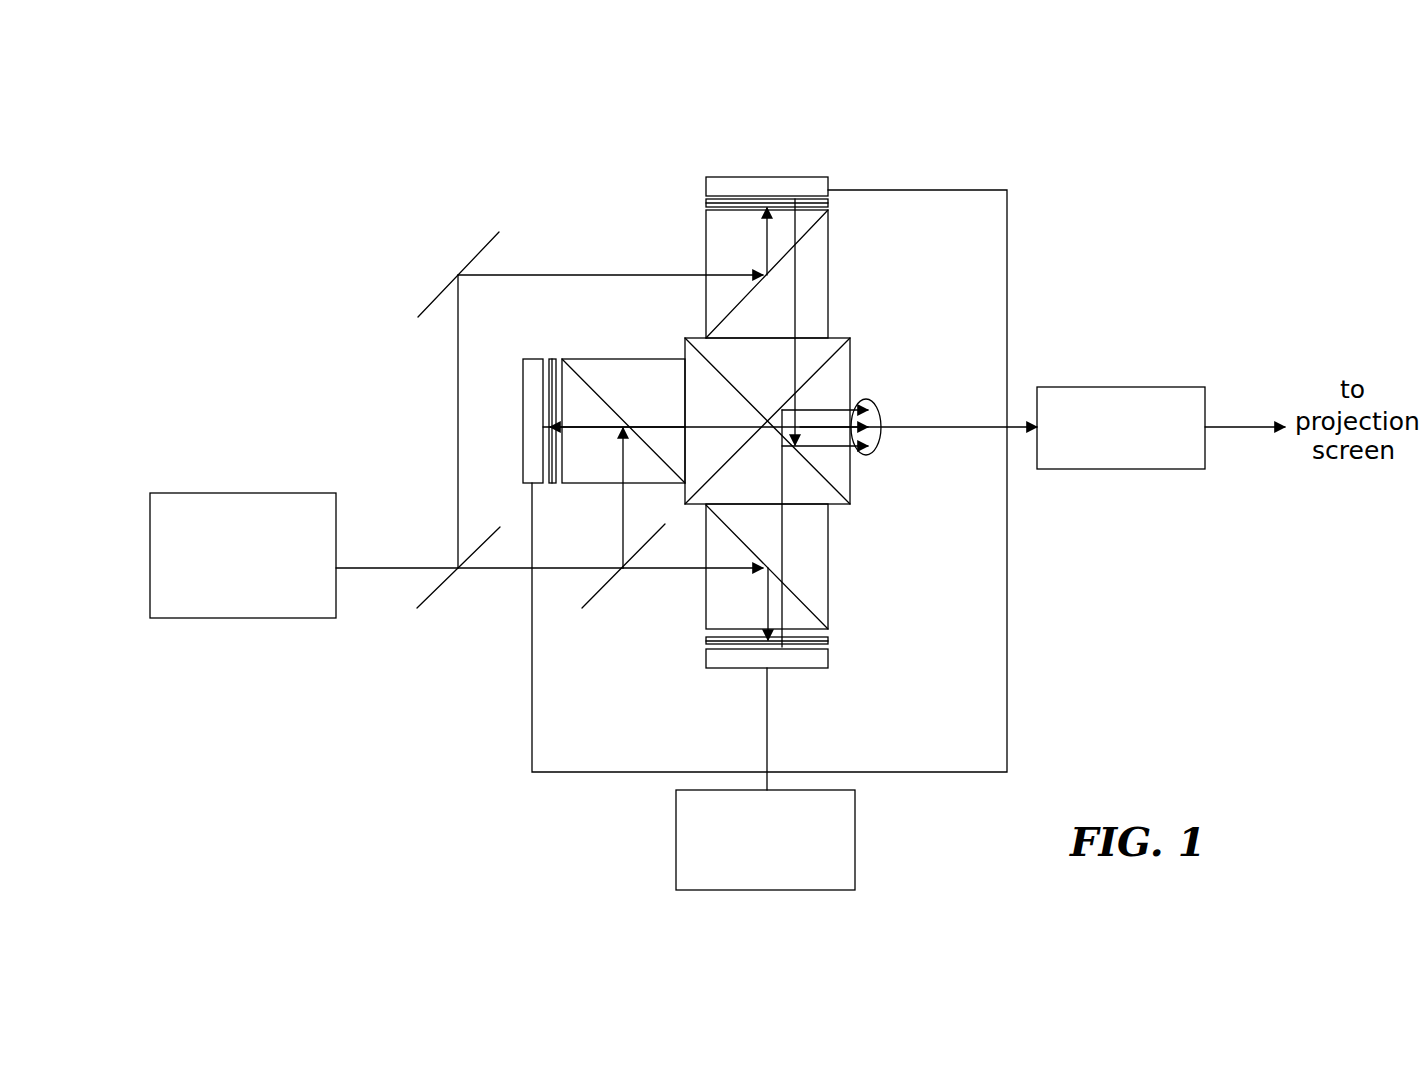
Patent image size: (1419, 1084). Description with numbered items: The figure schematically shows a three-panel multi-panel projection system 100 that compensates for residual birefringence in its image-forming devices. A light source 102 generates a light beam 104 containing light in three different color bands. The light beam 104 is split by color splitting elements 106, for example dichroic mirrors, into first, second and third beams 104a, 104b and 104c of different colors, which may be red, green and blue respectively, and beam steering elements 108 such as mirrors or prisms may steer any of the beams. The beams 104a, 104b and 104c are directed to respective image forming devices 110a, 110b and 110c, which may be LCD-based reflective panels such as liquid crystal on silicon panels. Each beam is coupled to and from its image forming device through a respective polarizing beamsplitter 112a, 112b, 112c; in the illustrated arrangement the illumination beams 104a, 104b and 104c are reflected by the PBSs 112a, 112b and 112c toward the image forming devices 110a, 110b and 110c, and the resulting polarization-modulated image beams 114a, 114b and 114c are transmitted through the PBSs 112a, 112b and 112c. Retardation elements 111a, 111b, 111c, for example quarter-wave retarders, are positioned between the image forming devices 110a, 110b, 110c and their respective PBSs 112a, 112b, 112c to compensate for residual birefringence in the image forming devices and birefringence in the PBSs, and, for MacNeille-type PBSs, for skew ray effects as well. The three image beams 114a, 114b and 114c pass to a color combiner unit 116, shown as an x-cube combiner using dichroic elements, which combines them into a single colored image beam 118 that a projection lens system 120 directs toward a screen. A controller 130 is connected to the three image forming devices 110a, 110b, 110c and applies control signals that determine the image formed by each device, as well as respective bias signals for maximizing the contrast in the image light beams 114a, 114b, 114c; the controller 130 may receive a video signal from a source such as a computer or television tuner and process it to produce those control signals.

The multi-panel projection system 100 is at (298, 266).
The light source 102 is at (237, 618).
The light beam 104 is at (374, 566).
The first beam 104a is at (579, 273).
The second beam 104b is at (665, 570).
The third beam 104c is at (622, 516).
The color splitting elements 106 is at (432, 596).
The beam steering elements 108 is at (477, 255).
The first image forming device 110a is at (770, 177).
The second image forming device 110b is at (805, 669).
The third image forming device 110c is at (521, 400).
The first retardation element 111a is at (707, 203).
The second retardation element 111b is at (830, 641).
The third retardation element 111c is at (543, 352).
The first polarizing beamsplitter 112a is at (830, 241).
The second polarizing beamsplitter 112b is at (830, 605).
The third polarizing beamsplitter 112c is at (600, 358).
The first image beam 114a is at (800, 292).
The second image beam 114b is at (790, 542).
The third image beam 114c is at (662, 420).
The color combiner unit 116 is at (853, 363).
The colored image beam 118 is at (884, 430).
The projection lens system 120 is at (1128, 386).
The controller 130 is at (856, 850).